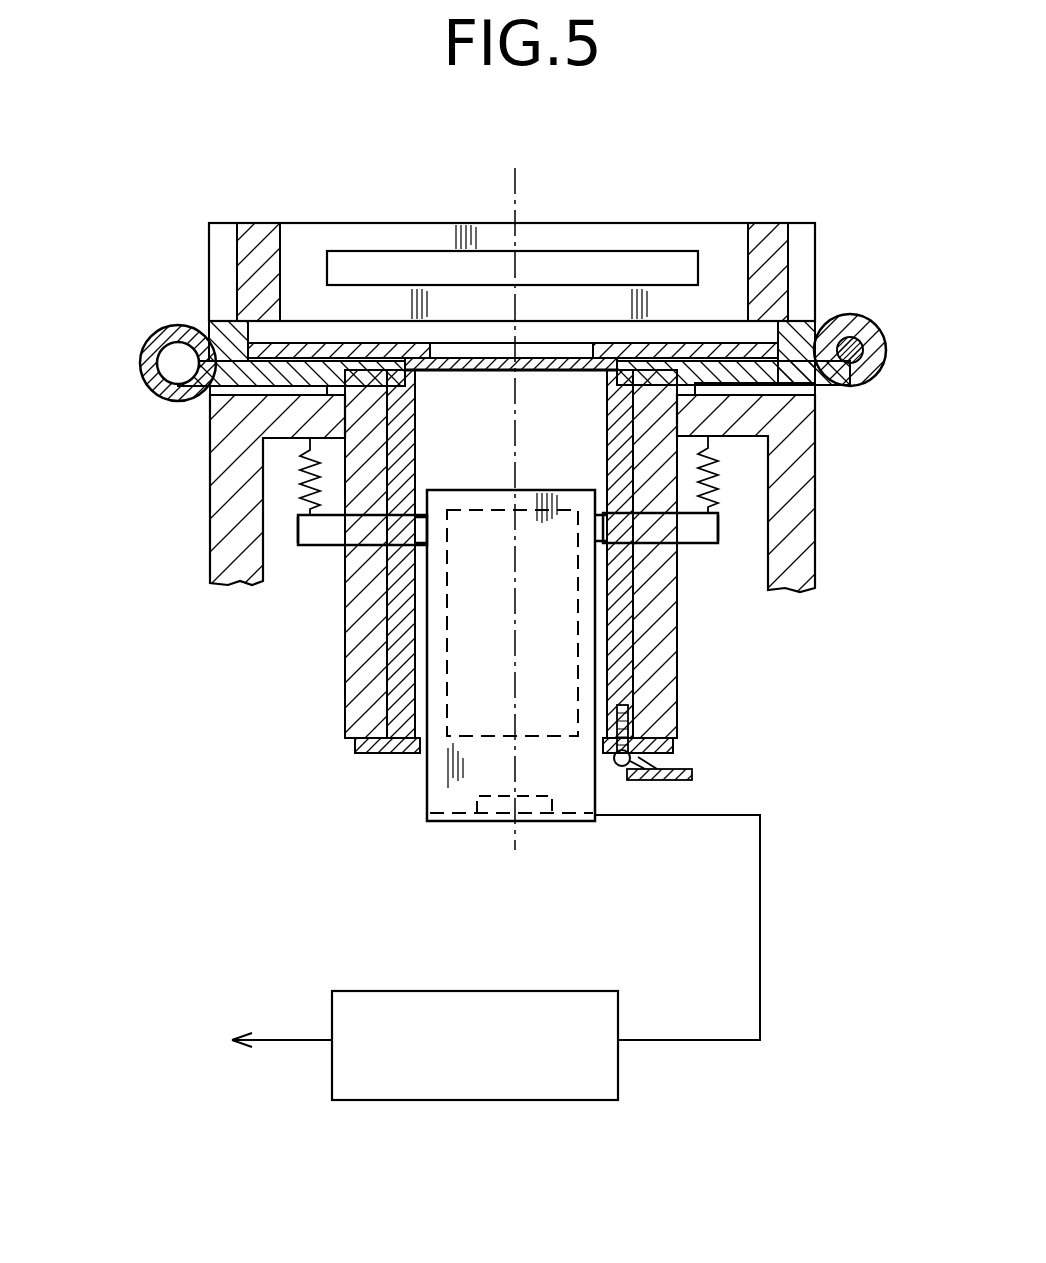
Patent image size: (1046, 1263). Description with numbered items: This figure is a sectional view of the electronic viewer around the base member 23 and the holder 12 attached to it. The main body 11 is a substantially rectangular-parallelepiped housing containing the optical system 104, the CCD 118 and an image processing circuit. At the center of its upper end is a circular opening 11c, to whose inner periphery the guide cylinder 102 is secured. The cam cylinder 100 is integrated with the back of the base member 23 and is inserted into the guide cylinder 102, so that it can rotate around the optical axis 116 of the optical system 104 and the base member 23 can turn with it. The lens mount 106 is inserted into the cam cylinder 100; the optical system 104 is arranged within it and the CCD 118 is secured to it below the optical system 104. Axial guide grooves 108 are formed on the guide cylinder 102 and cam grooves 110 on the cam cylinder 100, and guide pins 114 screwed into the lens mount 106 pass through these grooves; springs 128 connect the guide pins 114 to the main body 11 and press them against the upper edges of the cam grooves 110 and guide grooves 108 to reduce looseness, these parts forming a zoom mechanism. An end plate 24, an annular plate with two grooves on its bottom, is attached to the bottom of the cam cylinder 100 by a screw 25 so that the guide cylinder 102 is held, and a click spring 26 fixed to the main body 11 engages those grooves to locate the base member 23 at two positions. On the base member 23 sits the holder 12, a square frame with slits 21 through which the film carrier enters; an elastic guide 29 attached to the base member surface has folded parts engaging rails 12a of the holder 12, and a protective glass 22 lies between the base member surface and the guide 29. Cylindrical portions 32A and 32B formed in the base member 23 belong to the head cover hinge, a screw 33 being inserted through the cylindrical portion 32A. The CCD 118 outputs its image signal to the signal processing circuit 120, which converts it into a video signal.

The main body 11 is at (815, 530).
The circular opening 11c is at (350, 423).
The holder 12 is at (735, 228).
The rail 12a is at (302, 333).
The slit 21 is at (537, 263).
The protective glass 22 is at (532, 370).
The base member 23 is at (812, 400).
The end plate 24 is at (673, 743).
The screw 25 is at (612, 760).
The click spring 26 is at (693, 777).
The guide 29 is at (730, 333).
The cylindrical portion 32A is at (855, 320).
The cylindrical portion 32B is at (163, 398).
The screw 33 is at (858, 372).
The cam cylinder 100 is at (632, 688).
The guide cylinder 102 is at (663, 657).
The optical system 104 is at (490, 510).
The lens mount 106 is at (548, 720).
The guide groove 108 is at (357, 527).
The cam groove 110 is at (418, 528).
The guide pin 114 is at (300, 520).
The optical axis 116 is at (512, 830).
The CCD 118 is at (477, 800).
The signal processing circuit 120 is at (468, 988).
The spring 128 is at (305, 500).